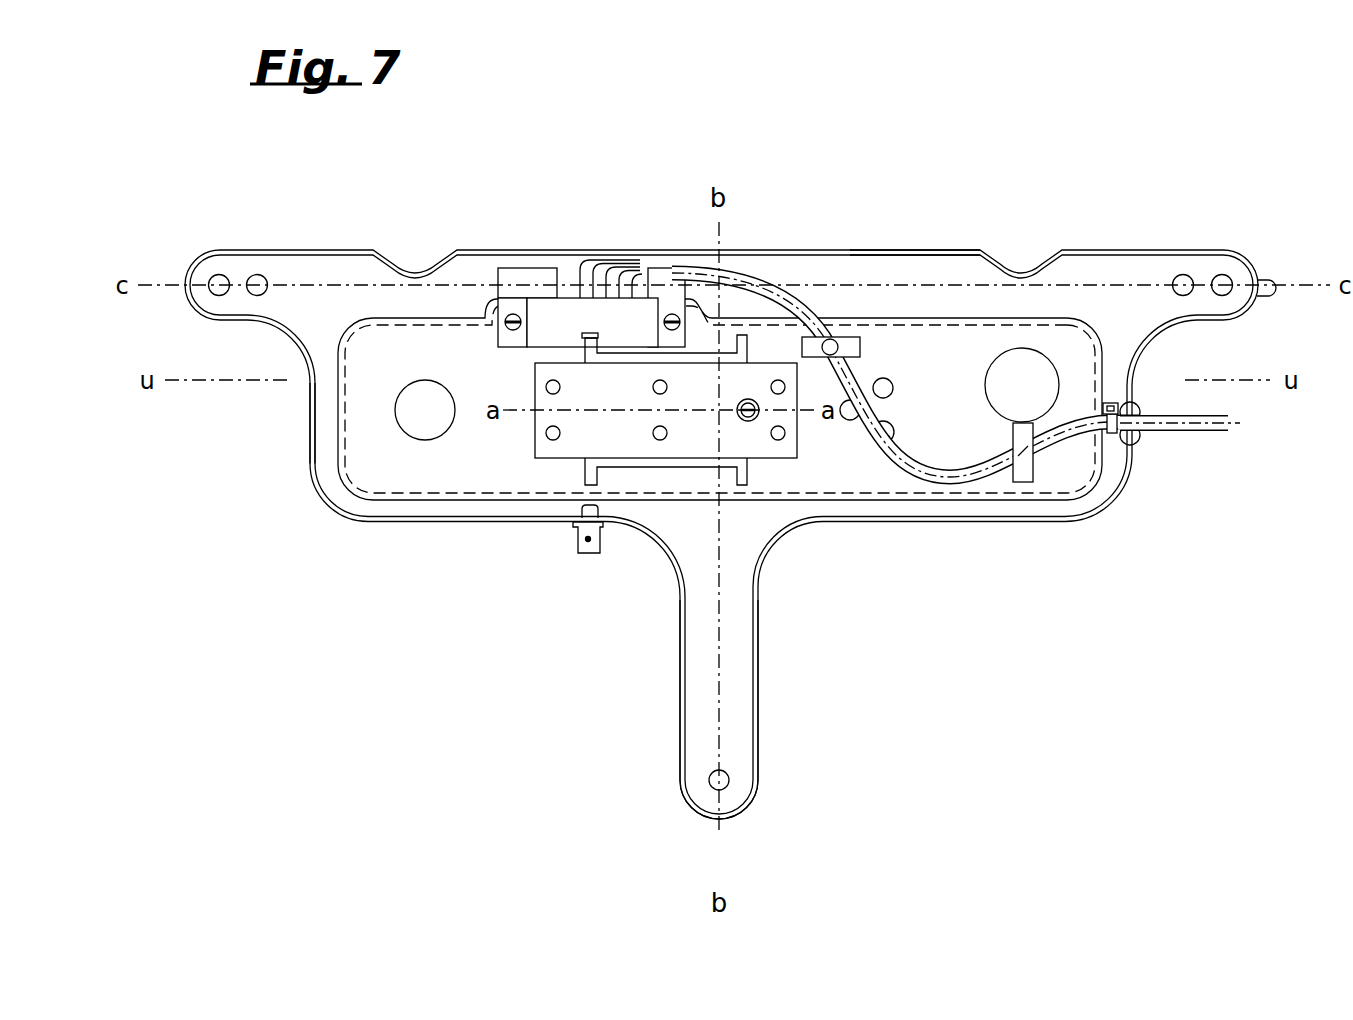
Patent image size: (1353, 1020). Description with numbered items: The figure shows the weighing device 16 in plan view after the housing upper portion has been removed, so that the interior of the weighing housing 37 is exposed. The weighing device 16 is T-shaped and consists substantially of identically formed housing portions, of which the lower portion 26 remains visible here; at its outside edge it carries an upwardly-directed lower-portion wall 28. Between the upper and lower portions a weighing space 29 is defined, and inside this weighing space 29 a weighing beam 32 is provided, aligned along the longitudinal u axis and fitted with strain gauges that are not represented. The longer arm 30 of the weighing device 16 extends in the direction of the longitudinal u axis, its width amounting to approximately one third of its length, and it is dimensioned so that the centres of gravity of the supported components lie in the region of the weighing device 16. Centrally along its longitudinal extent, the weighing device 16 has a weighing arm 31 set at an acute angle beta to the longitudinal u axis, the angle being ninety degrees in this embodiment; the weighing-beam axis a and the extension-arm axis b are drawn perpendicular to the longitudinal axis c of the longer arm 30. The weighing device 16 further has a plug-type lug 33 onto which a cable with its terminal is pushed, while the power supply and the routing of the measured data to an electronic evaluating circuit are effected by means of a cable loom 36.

The weighing device 16 is at (1040, 193).
The lower portion 26 is at (1142, 287).
The lower-portion wall 28 is at (842, 253).
The weighing space 29 is at (927, 292).
The longer arm 30 is at (493, 250).
The weighing arm 31 is at (720, 710).
The weighing beam 32 is at (700, 390).
The plug-type lug 33 is at (583, 555).
The cable loom 36 is at (1192, 429).
The weighing housing 37 is at (308, 473).